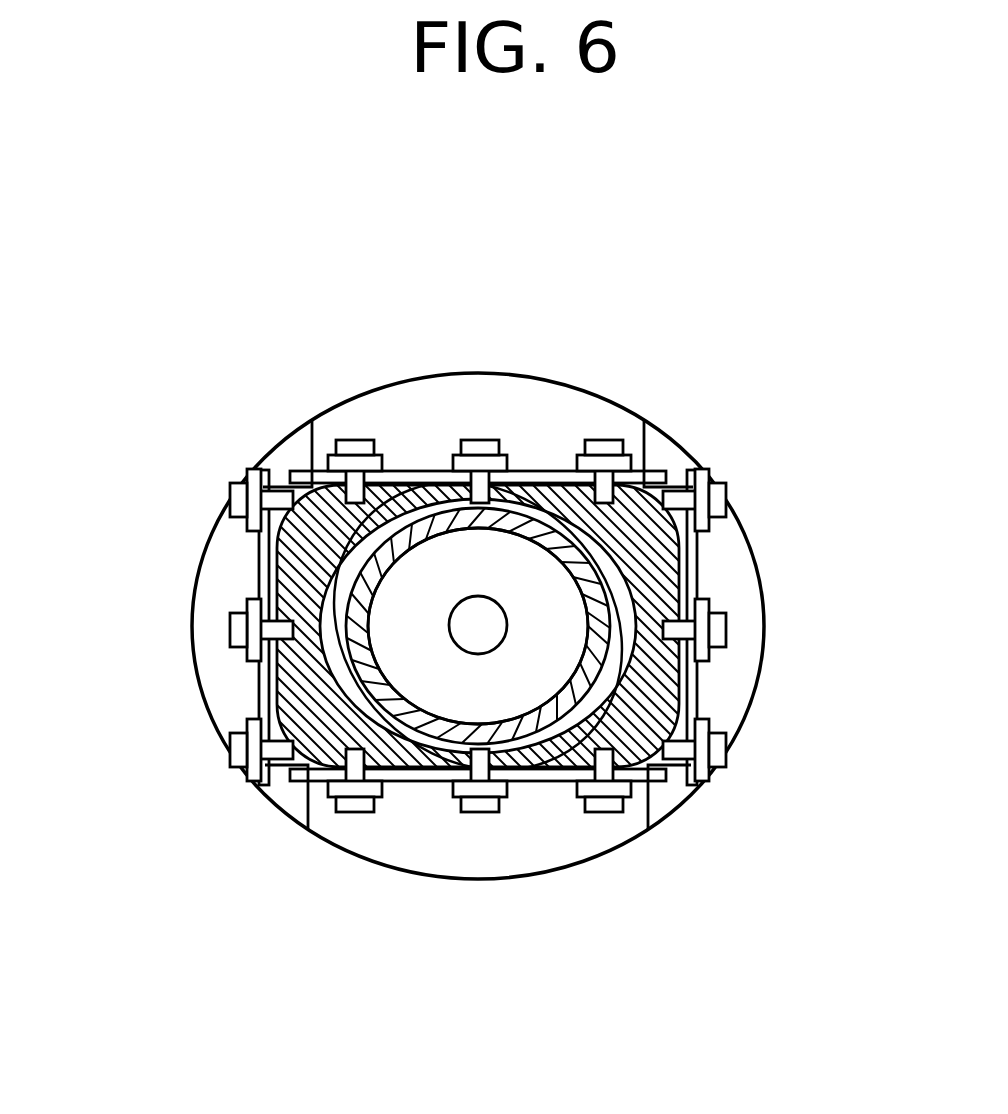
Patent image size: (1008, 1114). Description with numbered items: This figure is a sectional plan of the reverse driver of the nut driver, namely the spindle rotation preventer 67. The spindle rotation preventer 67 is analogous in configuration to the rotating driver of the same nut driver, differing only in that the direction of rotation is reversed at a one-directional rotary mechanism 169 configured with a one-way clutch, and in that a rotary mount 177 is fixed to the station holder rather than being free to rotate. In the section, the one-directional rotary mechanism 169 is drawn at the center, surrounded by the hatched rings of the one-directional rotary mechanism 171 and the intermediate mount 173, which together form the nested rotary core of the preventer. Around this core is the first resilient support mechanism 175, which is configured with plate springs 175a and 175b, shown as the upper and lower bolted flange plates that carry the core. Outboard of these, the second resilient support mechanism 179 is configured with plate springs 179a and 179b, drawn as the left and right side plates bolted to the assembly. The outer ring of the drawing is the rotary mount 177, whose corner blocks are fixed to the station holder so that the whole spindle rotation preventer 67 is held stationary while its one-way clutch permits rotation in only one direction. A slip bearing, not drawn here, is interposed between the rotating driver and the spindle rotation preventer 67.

The spindle rotation preventer 67 is at (772, 487).
The one-directional rotary mechanism 169 is at (608, 538).
The one-directional rotary mechanism 171 is at (437, 490).
The intermediate mount 173 is at (692, 585).
The first resilient support mechanism 175 is at (370, 828).
The plate spring 175a is at (556, 472).
The plate spring 175b is at (392, 785).
The rotary mount 177 is at (290, 455).
The second resilient support mechanism 179 is at (245, 588).
The plate spring 179a is at (257, 662).
The plate spring 179b is at (693, 700).